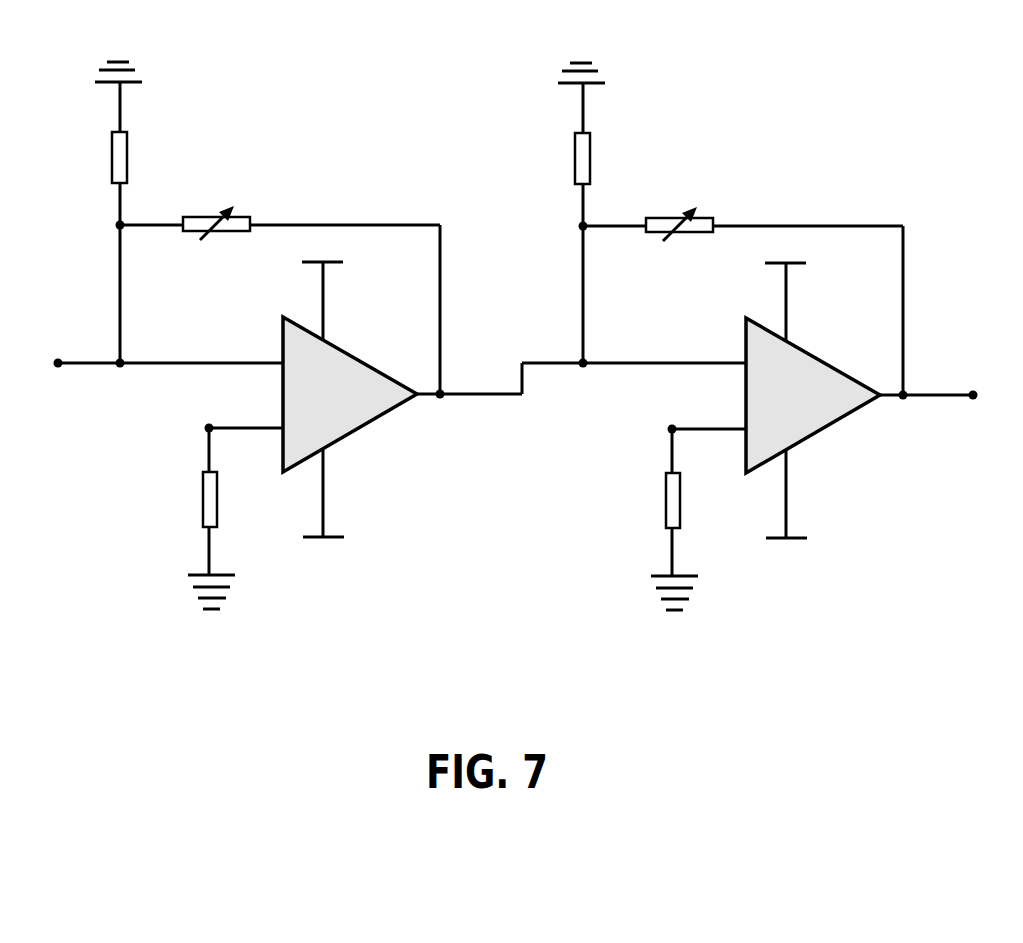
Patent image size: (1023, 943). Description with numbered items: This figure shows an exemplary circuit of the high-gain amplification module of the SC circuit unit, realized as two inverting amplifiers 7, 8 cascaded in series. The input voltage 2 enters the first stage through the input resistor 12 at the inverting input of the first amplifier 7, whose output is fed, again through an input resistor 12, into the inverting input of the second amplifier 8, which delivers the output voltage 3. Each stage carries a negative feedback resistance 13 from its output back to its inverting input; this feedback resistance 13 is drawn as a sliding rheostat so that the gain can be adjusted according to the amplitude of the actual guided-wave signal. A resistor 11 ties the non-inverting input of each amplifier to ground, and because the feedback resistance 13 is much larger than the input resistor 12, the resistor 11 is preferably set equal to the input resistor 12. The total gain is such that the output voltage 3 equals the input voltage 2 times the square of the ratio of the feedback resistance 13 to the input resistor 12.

The operational amplifier AMP7 7 is at (351, 408).
The operational amplifier AMP8 8 is at (745, 409).
The resistor R11 11 is at (433, 538).
The resistor R12 12 is at (372, 196).
The negative feedback resistance R13 13 is at (511, 286).
The input voltage V2 2 is at (73, 365).
The output voltage V3 3 is at (962, 397).